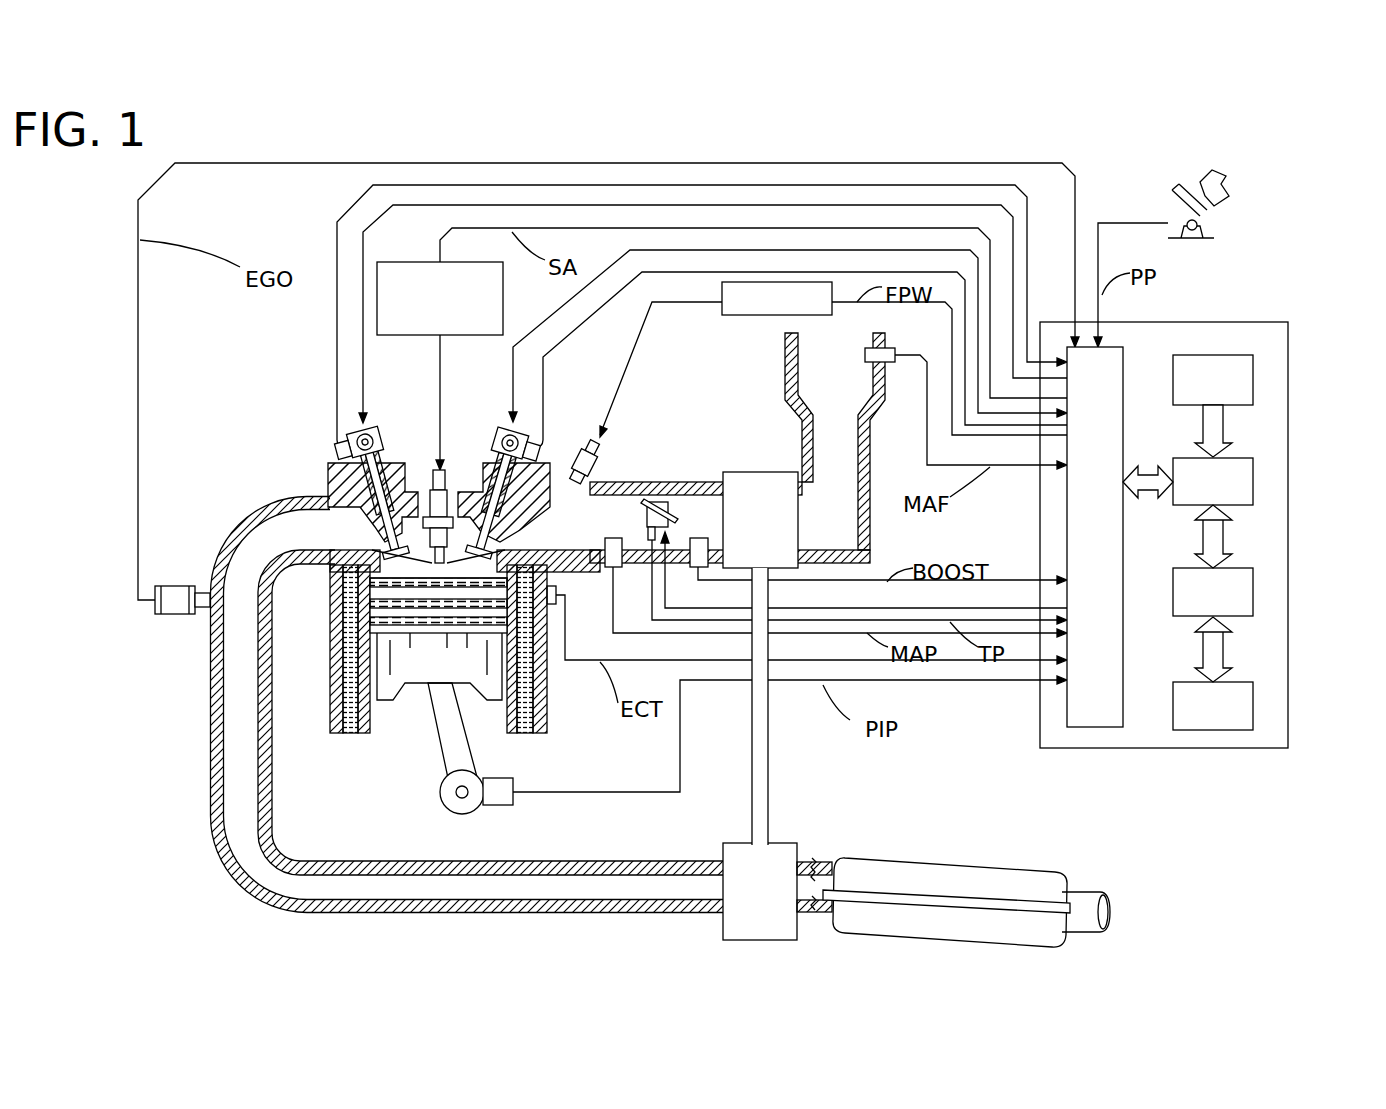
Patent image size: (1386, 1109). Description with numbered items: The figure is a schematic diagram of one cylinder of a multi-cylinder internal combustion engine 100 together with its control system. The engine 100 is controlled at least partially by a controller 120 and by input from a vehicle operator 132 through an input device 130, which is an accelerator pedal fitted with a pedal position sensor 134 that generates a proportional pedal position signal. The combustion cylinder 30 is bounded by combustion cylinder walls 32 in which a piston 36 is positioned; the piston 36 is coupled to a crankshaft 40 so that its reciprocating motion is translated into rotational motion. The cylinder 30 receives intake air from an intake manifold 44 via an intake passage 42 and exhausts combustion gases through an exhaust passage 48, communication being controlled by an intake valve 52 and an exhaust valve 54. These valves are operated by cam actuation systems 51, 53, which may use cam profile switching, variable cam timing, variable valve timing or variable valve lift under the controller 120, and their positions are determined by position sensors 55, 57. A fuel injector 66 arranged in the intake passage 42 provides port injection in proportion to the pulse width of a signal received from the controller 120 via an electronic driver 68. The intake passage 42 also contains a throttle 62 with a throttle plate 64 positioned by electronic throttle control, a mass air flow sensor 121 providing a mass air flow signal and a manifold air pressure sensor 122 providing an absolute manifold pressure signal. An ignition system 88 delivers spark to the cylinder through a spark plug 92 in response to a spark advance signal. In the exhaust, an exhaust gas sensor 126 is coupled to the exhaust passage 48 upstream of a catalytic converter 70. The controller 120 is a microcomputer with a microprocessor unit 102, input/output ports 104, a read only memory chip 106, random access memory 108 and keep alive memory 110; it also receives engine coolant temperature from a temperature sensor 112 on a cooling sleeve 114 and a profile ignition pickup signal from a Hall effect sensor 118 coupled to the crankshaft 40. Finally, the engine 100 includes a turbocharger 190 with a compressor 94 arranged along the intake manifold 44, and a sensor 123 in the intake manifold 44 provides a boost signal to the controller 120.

The internal combustion engine 100 is at (255, 410).
The combustion cylinder 30 is at (437, 572).
The combustion cylinder walls 32 is at (377, 720).
The piston 36 is at (442, 672).
The crankshaft 40 is at (453, 810).
The intake passage 42 is at (848, 389).
The intake manifold 44 is at (625, 529).
The exhaust passage 48 is at (310, 544).
The cam actuation system 51 is at (507, 436).
The intake valve 52 is at (484, 548).
The cam actuation system 53 is at (378, 436).
The exhaust valve 54 is at (390, 540).
The position sensor 55 is at (560, 430).
The position sensor 57 is at (352, 452).
The throttle 62 is at (660, 503).
The throttle plate 64 is at (677, 520).
The fuel injector 66 is at (580, 465).
The electronic driver 68 is at (733, 315).
The catalytic converter 70 is at (1017, 865).
The ignition system 88 is at (385, 262).
The spark plug 92 is at (452, 468).
The compressor 94 is at (770, 531).
The microprocessor unit 102 is at (1255, 472).
The input/output ports 104 is at (1127, 358).
The read only memory chip 106 is at (1252, 375).
The random access memory 108 is at (1255, 590).
The keep alive memory 110 is at (1255, 702).
The temperature sensor 112 is at (562, 597).
The cooling sleeve 114 is at (525, 680).
The Hall effect sensor 118 is at (498, 805).
The controller 120 is at (1278, 323).
The mass air flow sensor 121 is at (890, 362).
The manifold air pressure sensor 122 is at (605, 567).
The sensor 123 is at (688, 568).
The exhaust gas sensor 126 is at (150, 597).
The input device 130 is at (1231, 208).
The vehicle operator 132 is at (1224, 183).
The pedal position sensor 134 is at (1210, 232).
The turbocharger 190 is at (783, 785).